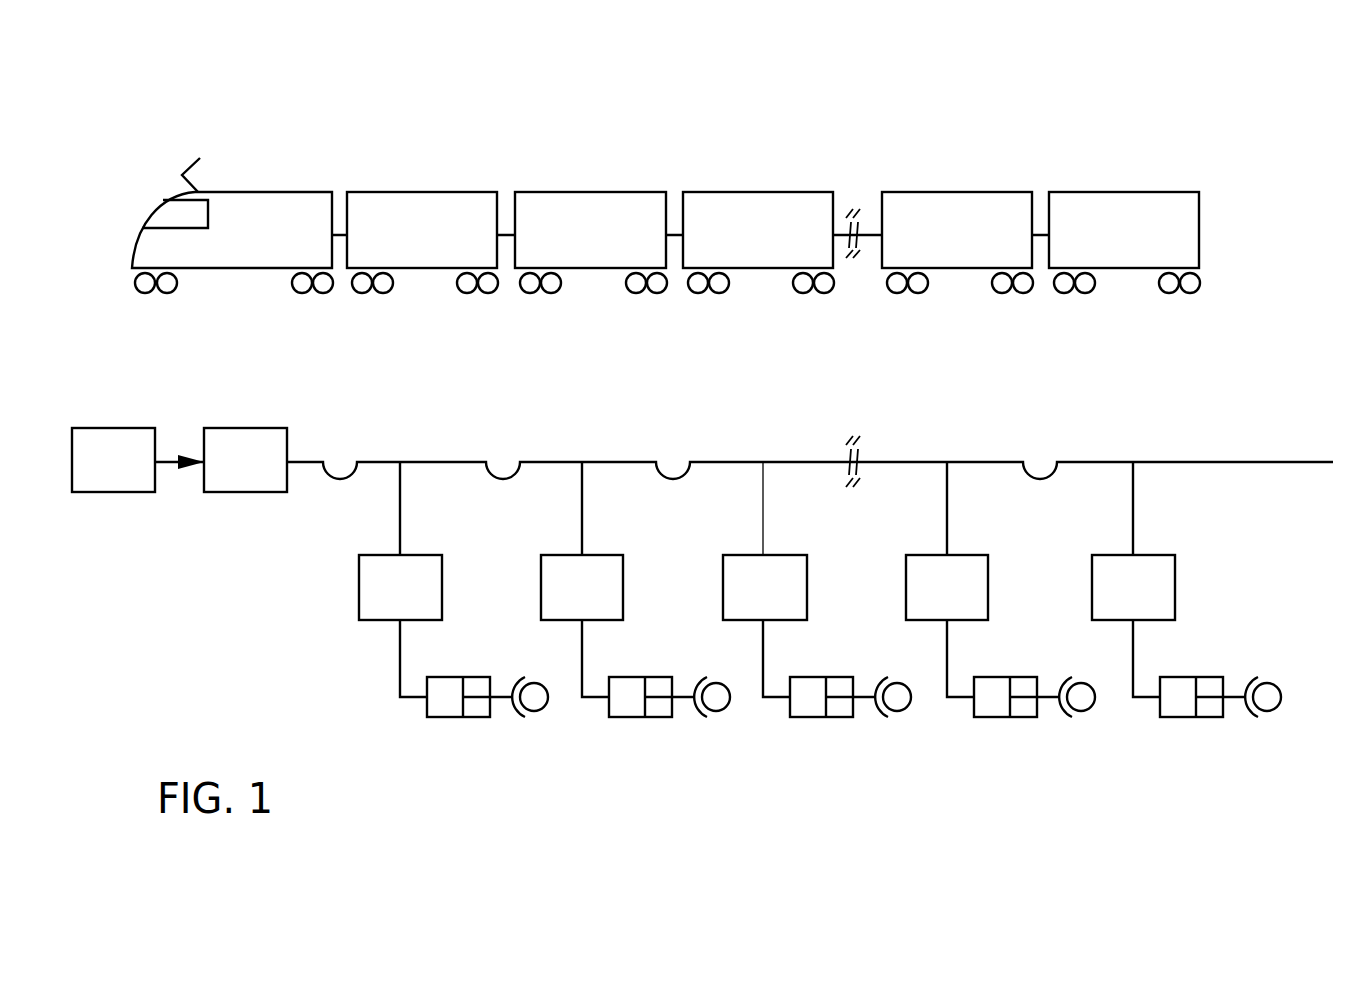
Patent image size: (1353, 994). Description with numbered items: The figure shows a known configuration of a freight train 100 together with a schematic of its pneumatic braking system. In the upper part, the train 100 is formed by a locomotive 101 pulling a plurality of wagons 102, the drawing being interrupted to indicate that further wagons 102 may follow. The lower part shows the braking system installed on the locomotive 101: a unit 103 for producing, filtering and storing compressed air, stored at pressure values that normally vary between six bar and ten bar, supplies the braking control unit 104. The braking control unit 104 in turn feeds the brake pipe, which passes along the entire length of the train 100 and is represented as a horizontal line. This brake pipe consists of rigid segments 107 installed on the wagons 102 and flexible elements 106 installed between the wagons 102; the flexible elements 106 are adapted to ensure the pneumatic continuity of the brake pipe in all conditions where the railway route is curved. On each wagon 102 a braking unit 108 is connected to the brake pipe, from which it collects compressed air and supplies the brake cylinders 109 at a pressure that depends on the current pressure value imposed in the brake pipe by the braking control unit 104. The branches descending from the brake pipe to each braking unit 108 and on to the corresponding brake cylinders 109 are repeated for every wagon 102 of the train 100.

The train 100 is at (950, 167).
The locomotive 101 is at (257, 212).
The wagon 102 is at (598, 210).
The unit for producing, filtering and storing compressed air 103 is at (108, 478).
The braking control unit 104 is at (243, 470).
The flexible element 106 is at (336, 478).
The rigid segment 107 is at (370, 462).
The braking unit 108 is at (388, 598).
The brake cylinder 109 is at (445, 702).